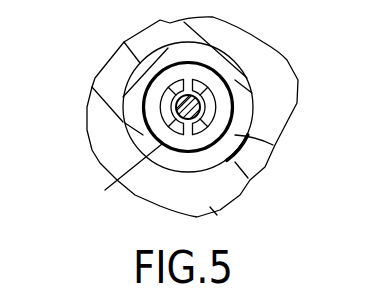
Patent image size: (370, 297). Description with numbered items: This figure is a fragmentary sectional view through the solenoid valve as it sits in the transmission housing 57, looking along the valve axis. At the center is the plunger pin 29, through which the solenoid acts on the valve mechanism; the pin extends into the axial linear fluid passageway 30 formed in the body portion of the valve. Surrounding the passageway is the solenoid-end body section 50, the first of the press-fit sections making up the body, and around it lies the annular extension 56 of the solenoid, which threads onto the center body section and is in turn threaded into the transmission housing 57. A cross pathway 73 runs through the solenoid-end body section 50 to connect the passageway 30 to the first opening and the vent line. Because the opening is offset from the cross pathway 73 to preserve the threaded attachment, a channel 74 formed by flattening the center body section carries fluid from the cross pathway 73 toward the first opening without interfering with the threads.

The plunger pin 29 is at (200, 90).
The axial linear fluid passageway 30 is at (203, 110).
The solenoid-end section 50 is at (168, 88).
The annular extension 56 is at (273, 145).
The transmission housing 57 is at (94, 78).
The cross pathway 73 is at (191, 135).
The channel 74 is at (108, 187).